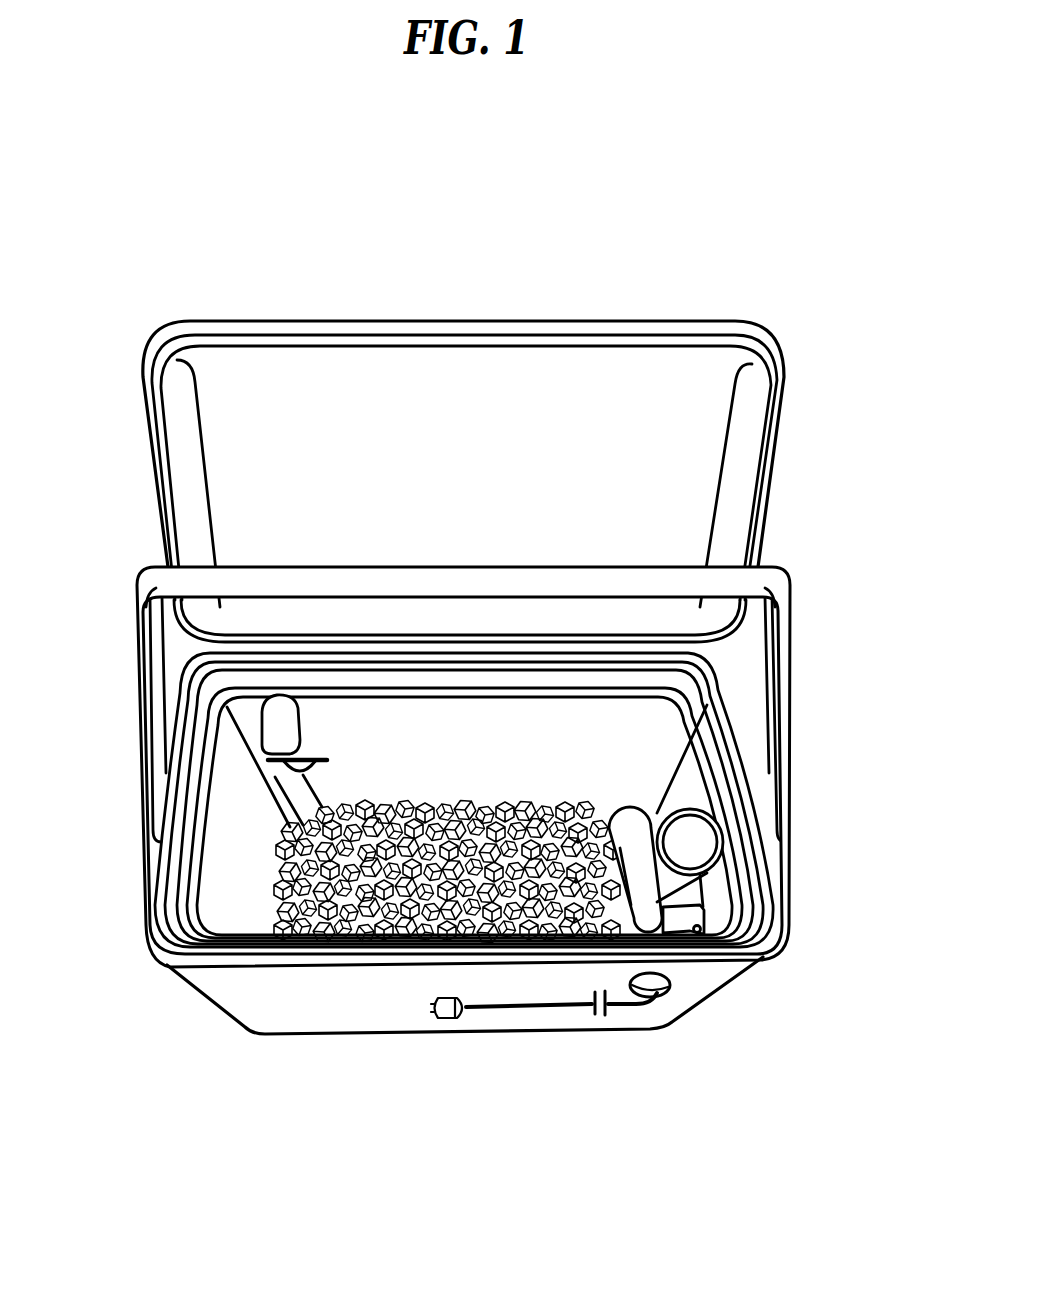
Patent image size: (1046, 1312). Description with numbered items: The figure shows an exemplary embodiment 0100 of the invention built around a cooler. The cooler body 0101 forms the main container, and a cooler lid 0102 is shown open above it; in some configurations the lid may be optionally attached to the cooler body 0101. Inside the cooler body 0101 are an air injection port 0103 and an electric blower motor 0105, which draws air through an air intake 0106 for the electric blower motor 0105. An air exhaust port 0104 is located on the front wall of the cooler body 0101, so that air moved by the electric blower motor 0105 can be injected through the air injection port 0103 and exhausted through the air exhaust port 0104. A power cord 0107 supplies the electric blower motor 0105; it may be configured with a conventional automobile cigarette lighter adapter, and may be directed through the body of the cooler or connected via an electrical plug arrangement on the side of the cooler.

The exemplary embodiment of the present invention 0100 is at (468, 163).
The cooler body 0101 is at (245, 987).
The cooler lid 0102 is at (257, 390).
The air injection port 0103 is at (277, 713).
The air exhaust port 0104 is at (660, 994).
The electric blower motor 0105 is at (637, 837).
The air intake for electric blower motor 0106 is at (687, 838).
The power cord 0107 is at (456, 1018).